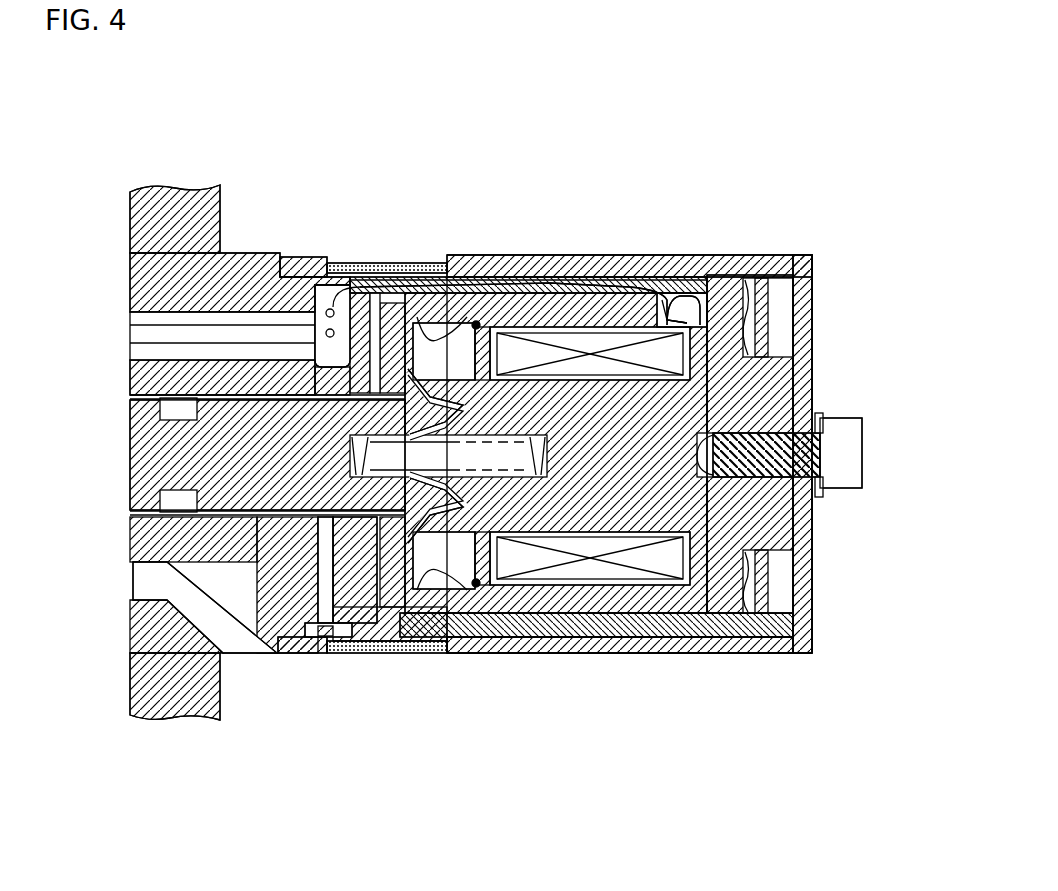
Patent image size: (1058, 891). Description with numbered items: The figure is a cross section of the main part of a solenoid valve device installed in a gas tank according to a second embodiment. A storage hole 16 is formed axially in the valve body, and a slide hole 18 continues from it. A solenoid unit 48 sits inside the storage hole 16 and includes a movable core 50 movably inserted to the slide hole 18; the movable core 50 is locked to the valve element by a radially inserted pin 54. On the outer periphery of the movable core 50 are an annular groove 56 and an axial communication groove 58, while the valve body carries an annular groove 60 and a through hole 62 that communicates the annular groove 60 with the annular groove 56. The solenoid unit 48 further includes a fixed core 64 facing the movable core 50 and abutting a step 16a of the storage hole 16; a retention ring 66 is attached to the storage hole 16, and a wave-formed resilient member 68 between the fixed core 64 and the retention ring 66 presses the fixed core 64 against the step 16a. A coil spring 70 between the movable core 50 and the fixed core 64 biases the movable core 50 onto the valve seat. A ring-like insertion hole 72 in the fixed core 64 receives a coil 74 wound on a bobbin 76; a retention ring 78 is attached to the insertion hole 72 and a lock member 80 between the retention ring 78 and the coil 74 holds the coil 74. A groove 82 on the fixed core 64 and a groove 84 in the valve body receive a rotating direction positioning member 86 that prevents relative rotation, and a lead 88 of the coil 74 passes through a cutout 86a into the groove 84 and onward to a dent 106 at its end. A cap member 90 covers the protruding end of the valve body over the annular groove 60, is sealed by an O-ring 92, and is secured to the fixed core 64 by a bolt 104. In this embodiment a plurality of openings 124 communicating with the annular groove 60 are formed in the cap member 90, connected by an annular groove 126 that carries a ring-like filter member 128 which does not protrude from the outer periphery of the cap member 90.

The storage hole 16 is at (720, 655).
The step 16a is at (527, 642).
The slide hole 18 is at (273, 257).
The solenoid unit 48 is at (657, 660).
The movable core 50 is at (270, 560).
The pin 54 is at (253, 257).
The annular groove 56 is at (258, 517).
The communication groove 58 is at (195, 590).
The annular groove 60 is at (335, 605).
The through hole 62 is at (322, 590).
The fixed core 64 is at (605, 510).
The retention ring 66 is at (807, 652).
The resilient member 68 is at (780, 655).
The coil spring 70 is at (452, 642).
The insertion hole 72 is at (477, 257).
The coil 74 is at (727, 257).
The bobbin 76 is at (587, 257).
The retention ring 78 is at (510, 262).
The lock member 80 is at (547, 260).
The groove 82 is at (767, 257).
The groove 84 is at (760, 257).
The rotating direction positioning member 86 is at (637, 257).
The cutout 86a is at (680, 257).
The lead 88 is at (427, 262).
The cap member 90 is at (843, 270).
The O-ring 92 is at (337, 257).
The bolt 104 is at (823, 490).
The dent 106 is at (373, 262).
The openings 124 is at (345, 640).
The annular groove 126 is at (330, 645).
The filter member 128 is at (433, 645).